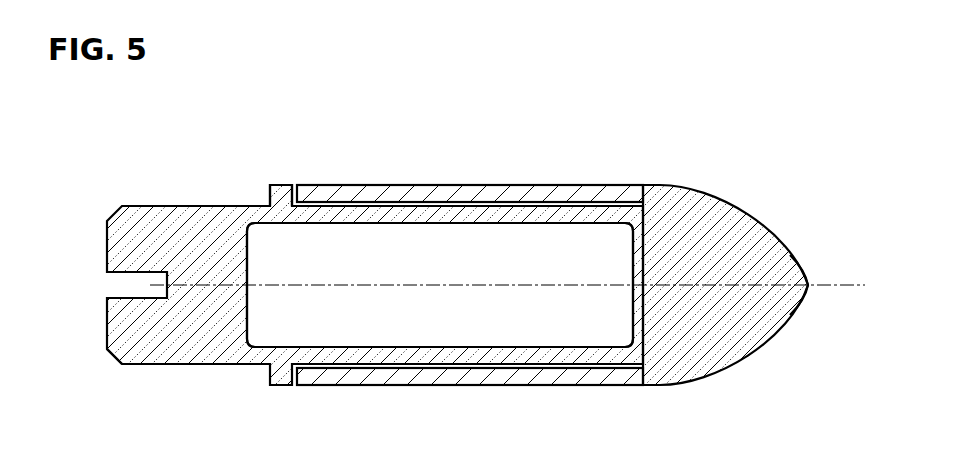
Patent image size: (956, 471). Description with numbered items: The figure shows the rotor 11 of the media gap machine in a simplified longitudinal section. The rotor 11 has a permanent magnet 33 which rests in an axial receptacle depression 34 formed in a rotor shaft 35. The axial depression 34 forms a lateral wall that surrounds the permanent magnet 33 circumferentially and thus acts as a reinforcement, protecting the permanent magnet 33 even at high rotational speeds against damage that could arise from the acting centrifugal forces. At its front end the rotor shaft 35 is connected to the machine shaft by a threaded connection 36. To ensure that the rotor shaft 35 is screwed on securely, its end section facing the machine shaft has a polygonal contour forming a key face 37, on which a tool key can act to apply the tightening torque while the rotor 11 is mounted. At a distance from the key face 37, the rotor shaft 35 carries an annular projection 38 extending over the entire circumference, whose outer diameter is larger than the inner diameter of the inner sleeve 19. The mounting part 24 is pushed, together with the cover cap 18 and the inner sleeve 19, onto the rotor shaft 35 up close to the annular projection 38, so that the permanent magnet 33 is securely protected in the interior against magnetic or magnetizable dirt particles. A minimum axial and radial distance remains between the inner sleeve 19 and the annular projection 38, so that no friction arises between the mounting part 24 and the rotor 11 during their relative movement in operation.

The rotor 11 is at (702, 186).
The cover cap 18 is at (800, 313).
The inner sleeve 19 is at (461, 190).
The mounting part 24 is at (693, 386).
The permanent magnet 33 is at (583, 248).
The axial receptacle depression 34 is at (318, 346).
The rotor shaft 35 is at (462, 355).
The threaded connection 36 is at (100, 354).
The key face 37 is at (163, 375).
The annular projection 38 is at (280, 185).